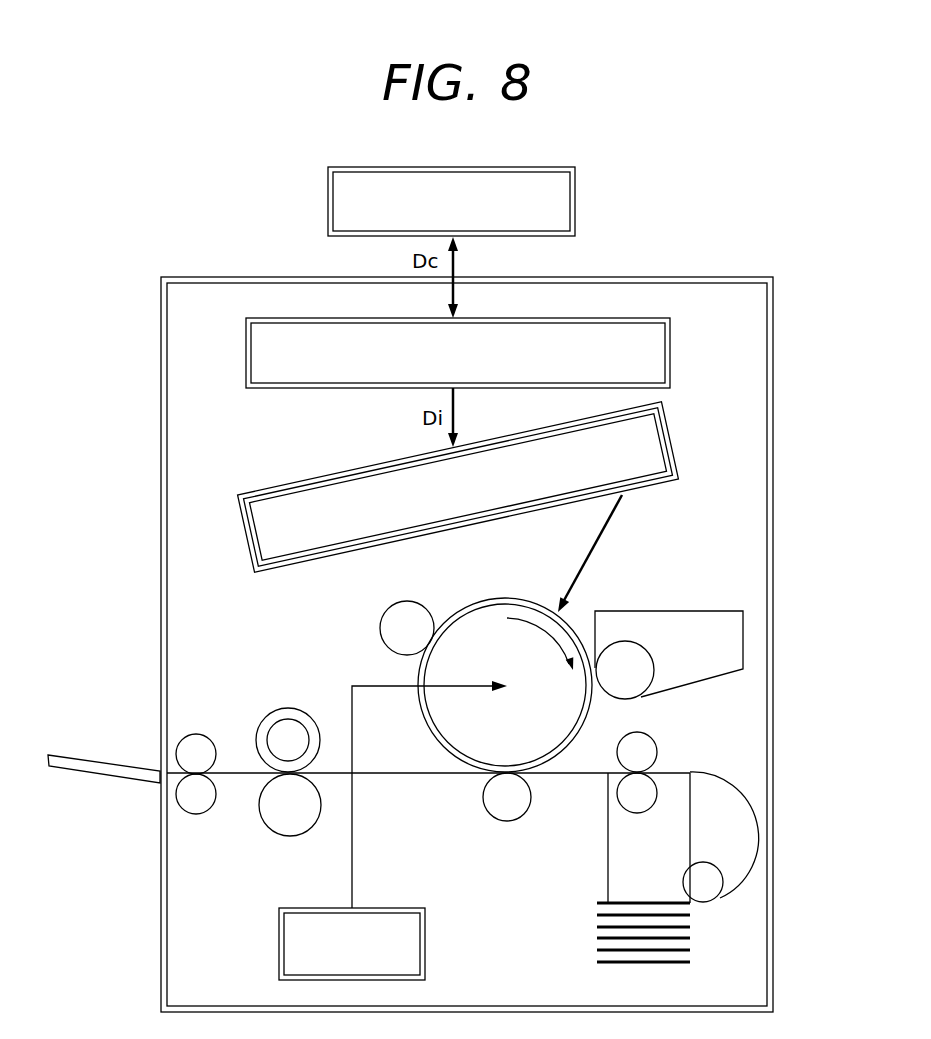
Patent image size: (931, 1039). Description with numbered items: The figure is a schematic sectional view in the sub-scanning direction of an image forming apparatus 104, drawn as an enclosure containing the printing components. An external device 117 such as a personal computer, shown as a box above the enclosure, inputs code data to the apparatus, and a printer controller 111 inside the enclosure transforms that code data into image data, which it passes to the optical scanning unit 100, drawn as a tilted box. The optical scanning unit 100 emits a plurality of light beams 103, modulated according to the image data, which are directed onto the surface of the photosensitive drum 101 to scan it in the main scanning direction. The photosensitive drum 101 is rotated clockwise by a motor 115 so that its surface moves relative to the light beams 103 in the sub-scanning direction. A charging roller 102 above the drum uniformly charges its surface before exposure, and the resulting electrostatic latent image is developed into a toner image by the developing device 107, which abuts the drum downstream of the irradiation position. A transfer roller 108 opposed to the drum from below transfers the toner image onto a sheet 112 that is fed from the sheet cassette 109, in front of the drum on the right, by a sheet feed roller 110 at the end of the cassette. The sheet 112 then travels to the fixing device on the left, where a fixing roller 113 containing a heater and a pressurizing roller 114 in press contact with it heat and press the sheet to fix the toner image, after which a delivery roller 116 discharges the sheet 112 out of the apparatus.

The optical scanning unit 100 is at (320, 474).
The photosensitive drum 101 is at (585, 713).
The charging roller 102 is at (407, 611).
The light beams 103 is at (600, 543).
The image forming apparatus 104 is at (731, 261).
The developing device 107 is at (744, 618).
The transfer roller 108 is at (513, 815).
The sheet cassette 109 is at (586, 940).
The sheet feed roller 110 is at (700, 882).
The printer controller 111 is at (671, 338).
The sheet 112 is at (395, 776).
The fixing roller 113 is at (283, 735).
The pressurizing roller 114 is at (267, 815).
The motor 115 is at (279, 945).
The delivery roller 116 is at (207, 743).
The external device 117 is at (577, 183).